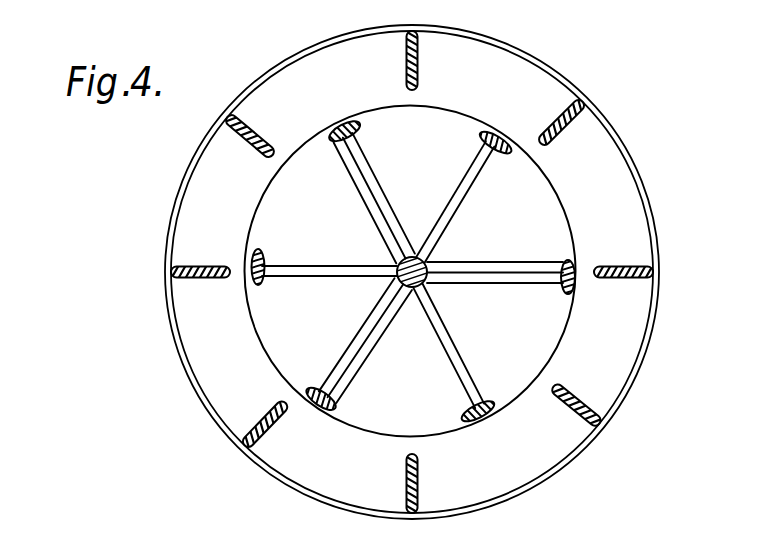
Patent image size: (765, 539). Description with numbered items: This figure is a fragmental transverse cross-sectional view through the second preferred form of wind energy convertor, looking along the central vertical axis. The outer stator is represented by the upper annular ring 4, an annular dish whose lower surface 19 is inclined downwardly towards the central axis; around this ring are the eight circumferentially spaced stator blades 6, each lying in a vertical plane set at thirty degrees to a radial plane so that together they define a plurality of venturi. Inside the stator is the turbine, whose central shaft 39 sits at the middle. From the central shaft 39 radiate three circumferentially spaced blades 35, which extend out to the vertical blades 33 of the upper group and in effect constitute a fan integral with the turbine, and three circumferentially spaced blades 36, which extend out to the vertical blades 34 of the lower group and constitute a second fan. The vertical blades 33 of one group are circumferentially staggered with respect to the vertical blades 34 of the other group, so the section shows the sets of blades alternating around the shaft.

The upper annular ring 4 is at (556, 61).
The blades 6 is at (188, 280).
The lower surface 19 is at (327, 63).
The circumferentially spaced blades 33 is at (356, 133).
The circumferentially spaced blades 34 is at (493, 153).
The circumferentially spaced blades 35 is at (377, 208).
The circumferentially spaced blades 36 is at (317, 276).
The central shaft 39 is at (423, 262).